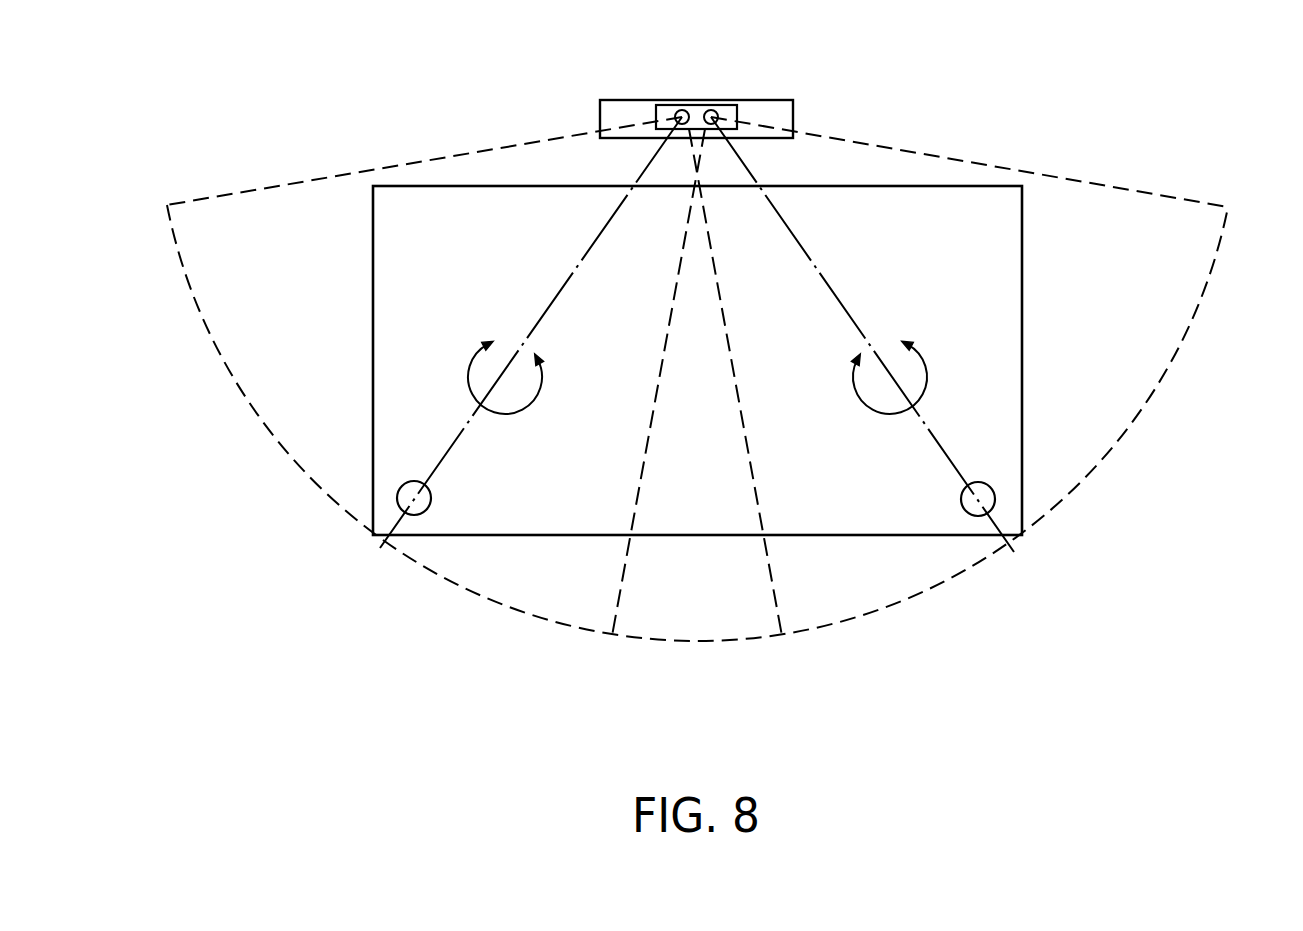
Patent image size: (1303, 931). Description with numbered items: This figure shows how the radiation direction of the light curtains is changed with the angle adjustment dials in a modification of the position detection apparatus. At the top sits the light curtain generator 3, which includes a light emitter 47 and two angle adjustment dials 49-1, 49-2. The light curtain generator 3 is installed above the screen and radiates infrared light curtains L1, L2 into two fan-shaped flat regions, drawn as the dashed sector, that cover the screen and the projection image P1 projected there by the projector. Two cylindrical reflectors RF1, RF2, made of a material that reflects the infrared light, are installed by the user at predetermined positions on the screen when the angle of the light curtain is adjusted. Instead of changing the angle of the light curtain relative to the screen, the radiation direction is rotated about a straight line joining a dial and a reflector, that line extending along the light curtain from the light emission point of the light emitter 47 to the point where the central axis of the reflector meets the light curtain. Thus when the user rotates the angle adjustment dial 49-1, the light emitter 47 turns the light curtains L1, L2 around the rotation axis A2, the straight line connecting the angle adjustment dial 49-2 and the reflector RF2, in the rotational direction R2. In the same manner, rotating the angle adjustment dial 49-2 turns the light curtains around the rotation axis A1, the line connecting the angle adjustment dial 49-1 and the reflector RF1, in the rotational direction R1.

The light curtain generator 3 is at (600, 117).
The light emitter 47 is at (737, 111).
The angle adjustment dial 49-1 is at (682, 110).
The angle adjustment dial 49-2 is at (711, 110).
The light curtain L1 is at (226, 192).
The light curtain L2 is at (1150, 192).
The rotation axis A1 is at (555, 293).
The rotation axis A2 is at (840, 292).
The projection image P1 is at (1022, 323).
The rotational direction R1 is at (530, 402).
The rotational direction R2 is at (858, 402).
The reflector RF1 is at (431, 498).
The reflector RF2 is at (961, 499).